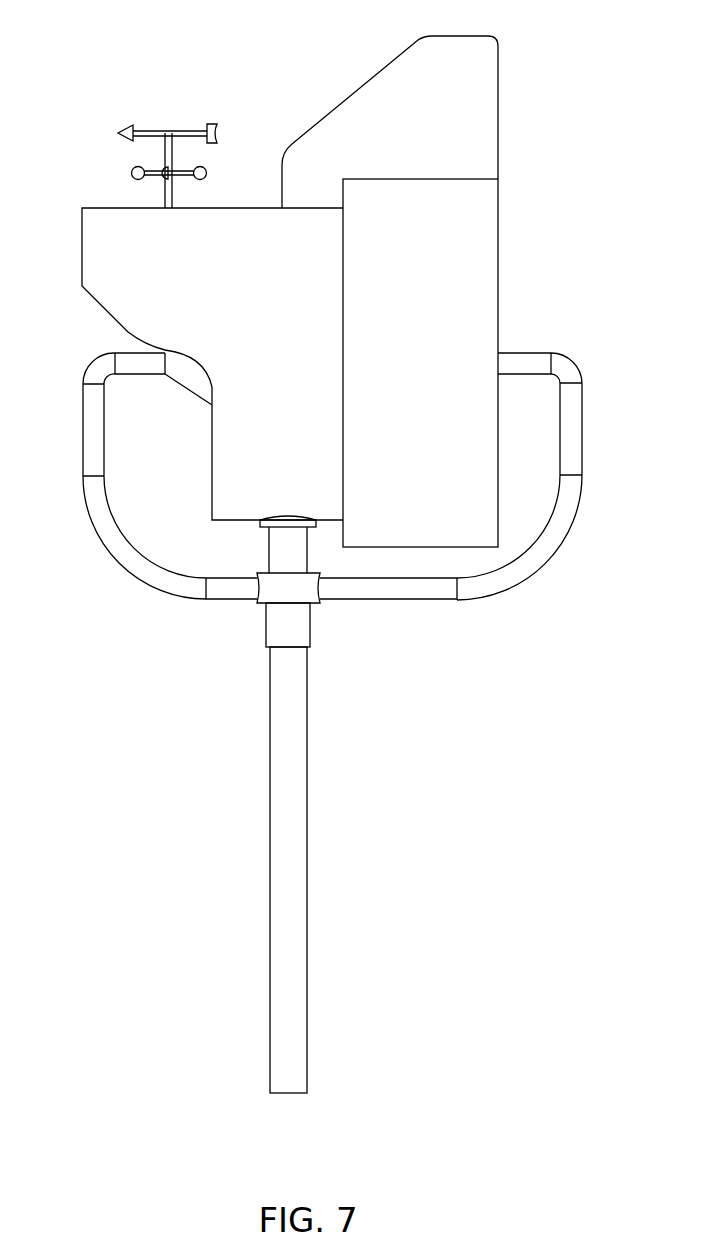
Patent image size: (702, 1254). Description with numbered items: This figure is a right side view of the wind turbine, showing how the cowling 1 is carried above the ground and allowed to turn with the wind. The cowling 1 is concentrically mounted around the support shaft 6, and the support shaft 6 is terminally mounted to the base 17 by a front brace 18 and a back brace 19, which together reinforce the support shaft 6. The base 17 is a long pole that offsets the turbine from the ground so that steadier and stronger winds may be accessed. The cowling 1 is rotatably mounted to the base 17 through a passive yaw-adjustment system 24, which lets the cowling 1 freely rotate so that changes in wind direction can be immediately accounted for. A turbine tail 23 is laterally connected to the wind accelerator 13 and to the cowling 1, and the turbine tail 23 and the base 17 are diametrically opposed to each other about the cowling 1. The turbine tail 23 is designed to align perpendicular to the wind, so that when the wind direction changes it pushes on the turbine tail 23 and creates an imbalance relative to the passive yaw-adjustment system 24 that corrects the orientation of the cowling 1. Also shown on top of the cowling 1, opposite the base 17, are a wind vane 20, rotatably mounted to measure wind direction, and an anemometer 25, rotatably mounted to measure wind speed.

The cowling 1 is at (85, 234).
The wind vane 20 is at (183, 131).
The anemometer 25 is at (131, 173).
The turbine tail 23 is at (350, 100).
The wind accelerator 13 is at (495, 232).
The support shaft 6 is at (508, 356).
The back brace 19 is at (563, 430).
The front brace 18 is at (100, 468).
The passive yaw-adjustment system 24 is at (306, 635).
The base 17 is at (270, 835).